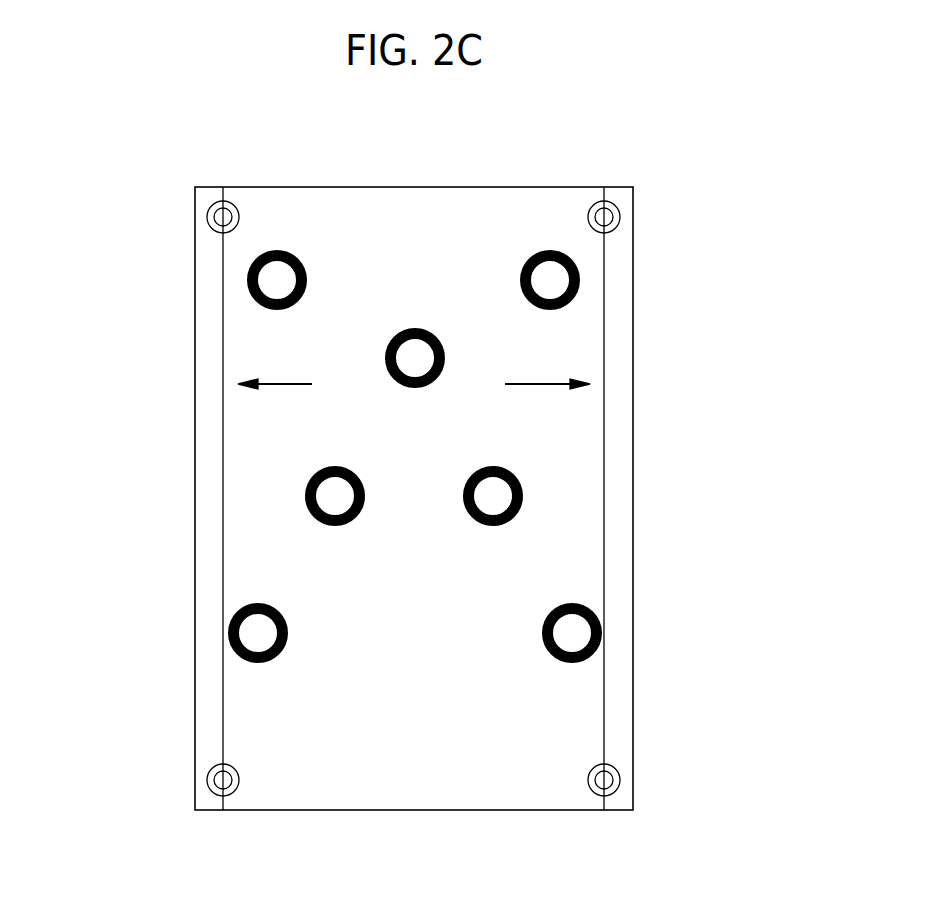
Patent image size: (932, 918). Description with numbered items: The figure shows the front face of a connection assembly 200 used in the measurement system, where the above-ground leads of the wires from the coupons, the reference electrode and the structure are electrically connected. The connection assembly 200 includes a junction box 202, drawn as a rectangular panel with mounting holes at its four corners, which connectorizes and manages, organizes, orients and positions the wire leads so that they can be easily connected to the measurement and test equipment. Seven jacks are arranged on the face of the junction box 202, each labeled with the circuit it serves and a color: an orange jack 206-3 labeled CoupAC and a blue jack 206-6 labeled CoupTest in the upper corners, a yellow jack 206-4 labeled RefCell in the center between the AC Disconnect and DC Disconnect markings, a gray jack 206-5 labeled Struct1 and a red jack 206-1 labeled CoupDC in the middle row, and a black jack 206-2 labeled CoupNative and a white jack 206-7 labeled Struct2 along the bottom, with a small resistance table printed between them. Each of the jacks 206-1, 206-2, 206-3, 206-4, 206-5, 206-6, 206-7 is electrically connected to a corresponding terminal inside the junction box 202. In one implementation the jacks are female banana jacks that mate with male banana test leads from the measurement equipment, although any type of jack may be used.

The connection assembly 200 is at (740, 124).
The junction box 202 is at (542, 186).
The jack 206-1 is at (493, 496).
The jack 206-2 is at (258, 632).
The jack 206-3 is at (277, 282).
The jack 206-4 is at (415, 358).
The jack 206-5 is at (335, 496).
The jack 206-6 is at (550, 282).
The jack 206-7 is at (572, 633).